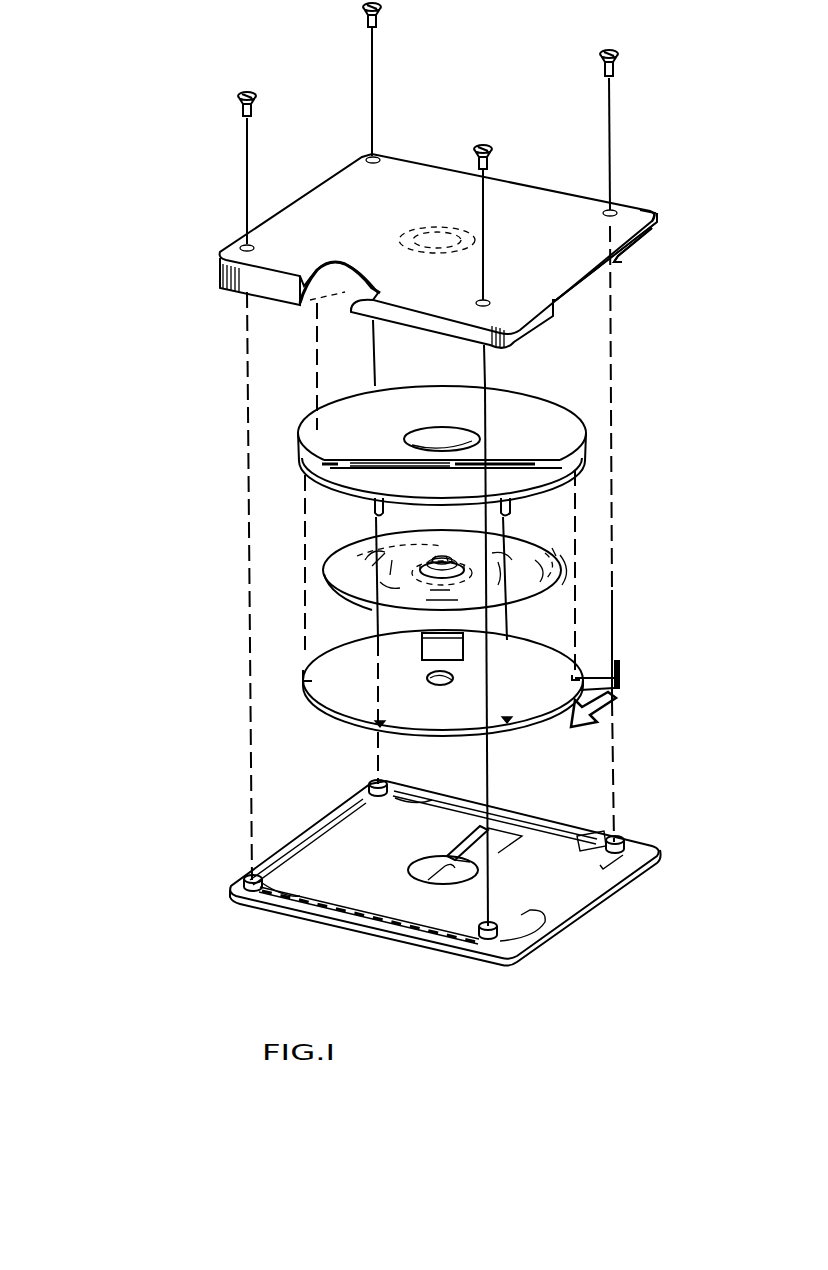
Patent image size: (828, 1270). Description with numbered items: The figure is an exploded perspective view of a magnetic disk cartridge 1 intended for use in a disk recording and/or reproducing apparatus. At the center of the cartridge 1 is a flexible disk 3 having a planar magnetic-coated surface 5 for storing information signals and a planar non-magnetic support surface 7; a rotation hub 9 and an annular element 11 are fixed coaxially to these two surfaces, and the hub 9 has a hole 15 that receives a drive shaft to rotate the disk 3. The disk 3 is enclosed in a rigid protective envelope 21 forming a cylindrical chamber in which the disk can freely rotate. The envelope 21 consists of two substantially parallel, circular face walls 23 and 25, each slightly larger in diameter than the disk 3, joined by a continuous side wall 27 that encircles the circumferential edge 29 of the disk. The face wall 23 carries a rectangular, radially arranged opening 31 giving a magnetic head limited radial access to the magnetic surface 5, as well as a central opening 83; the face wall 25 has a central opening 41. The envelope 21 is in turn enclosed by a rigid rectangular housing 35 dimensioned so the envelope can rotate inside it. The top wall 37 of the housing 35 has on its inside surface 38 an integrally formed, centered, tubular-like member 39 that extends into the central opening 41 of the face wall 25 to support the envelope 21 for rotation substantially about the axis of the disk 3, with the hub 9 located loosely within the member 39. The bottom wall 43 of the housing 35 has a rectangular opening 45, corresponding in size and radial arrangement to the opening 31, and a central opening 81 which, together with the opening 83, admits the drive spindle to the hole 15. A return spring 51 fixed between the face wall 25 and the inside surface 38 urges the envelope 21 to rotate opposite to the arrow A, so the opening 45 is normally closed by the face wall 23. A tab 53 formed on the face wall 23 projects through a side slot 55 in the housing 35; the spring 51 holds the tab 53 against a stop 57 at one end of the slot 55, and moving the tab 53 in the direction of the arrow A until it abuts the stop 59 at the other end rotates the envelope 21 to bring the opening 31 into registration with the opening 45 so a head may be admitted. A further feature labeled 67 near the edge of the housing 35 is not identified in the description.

The magnetic disk cartridge 1 is at (142, 392).
The flexible disk 3 is at (351, 606).
The magnetic-coated surface 5 is at (407, 612).
The non-magnetic support surface 7 is at (340, 582).
The rotation hub 9 is at (460, 565).
The annular element 11 is at (358, 538).
The hole 15 is at (440, 558).
The rigid protective envelope 21 is at (593, 455).
The face wall 23 is at (538, 726).
The face wall 25 is at (553, 440).
The continuous side wall 27 is at (576, 466).
The circumferential edge 29 is at (545, 600).
The rectangular-shaped opening 31 is at (430, 647).
The rigid rectangular-shaped housing 35 is at (654, 211).
The top wall 37 is at (645, 212).
The inside surface 38 is at (368, 285).
The tubular-like member 39 is at (400, 248).
The central opening 41 is at (472, 440).
The bottom wall 43 is at (290, 912).
The rectangular-shaped opening 45 is at (453, 848).
The return spring 51 is at (396, 470).
The tab 53 is at (623, 687).
The side slot 55 is at (597, 281).
The stop 57 is at (618, 263).
The stop 59 is at (558, 316).
The lip 67 is at (655, 229).
The central opening 81 is at (433, 877).
The central opening 83 is at (433, 678).
The arrow A is at (583, 744).